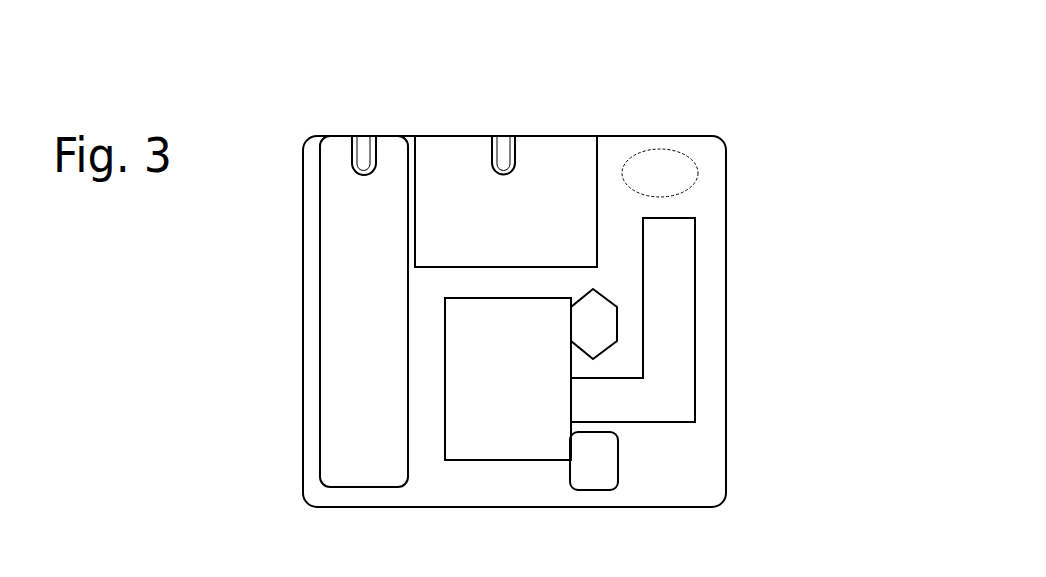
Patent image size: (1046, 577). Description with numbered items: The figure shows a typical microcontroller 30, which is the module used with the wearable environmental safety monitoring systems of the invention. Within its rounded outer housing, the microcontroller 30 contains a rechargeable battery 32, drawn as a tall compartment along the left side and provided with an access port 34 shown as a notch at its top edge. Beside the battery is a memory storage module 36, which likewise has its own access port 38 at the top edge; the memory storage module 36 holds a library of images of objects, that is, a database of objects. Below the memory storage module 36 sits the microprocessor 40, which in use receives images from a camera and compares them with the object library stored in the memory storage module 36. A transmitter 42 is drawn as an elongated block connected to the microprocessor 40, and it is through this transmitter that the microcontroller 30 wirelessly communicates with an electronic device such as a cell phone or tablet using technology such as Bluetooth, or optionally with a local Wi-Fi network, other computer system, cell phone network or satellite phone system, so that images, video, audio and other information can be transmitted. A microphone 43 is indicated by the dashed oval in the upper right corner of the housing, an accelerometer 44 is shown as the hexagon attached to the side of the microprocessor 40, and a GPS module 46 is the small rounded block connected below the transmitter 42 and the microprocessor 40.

The microcontroller 30 is at (833, 271).
The rechargeable battery 32 is at (341, 274).
The access port 34 is at (361, 151).
The memory storage module 36 is at (519, 216).
The access port 38 is at (504, 141).
The microprocessor 40 is at (468, 411).
The transmitter 42 is at (656, 292).
The microphone 43 is at (677, 172).
The accelerometer 44 is at (581, 322).
The GPS module 46 is at (588, 472).